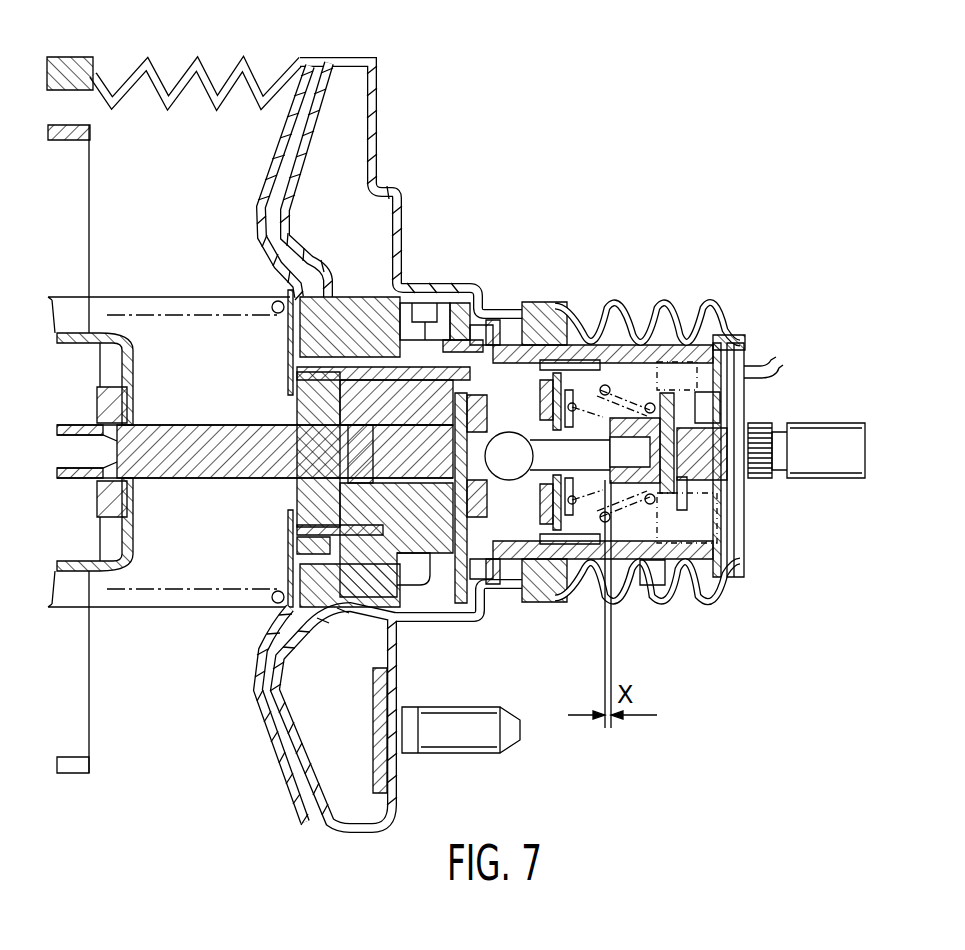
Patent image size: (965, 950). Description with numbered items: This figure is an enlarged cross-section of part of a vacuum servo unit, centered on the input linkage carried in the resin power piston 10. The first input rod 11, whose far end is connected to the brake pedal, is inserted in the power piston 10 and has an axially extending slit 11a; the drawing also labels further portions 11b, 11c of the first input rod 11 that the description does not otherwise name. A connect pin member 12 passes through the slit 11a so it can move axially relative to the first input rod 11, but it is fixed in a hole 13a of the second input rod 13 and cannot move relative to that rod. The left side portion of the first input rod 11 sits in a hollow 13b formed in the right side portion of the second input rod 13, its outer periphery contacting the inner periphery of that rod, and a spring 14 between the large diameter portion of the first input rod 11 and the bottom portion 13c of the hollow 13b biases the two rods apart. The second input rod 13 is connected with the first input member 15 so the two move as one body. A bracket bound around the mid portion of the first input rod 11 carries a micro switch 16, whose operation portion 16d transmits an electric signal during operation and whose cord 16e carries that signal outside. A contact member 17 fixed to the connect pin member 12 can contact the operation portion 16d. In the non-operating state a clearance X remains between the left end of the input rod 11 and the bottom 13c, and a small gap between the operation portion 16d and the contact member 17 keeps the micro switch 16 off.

The power piston 10 is at (575, 355).
The first input rod 11 is at (850, 453).
The slit 11a is at (747, 430).
The lower engagement portion 11b is at (660, 580).
The upper engagement portion 11c is at (657, 400).
The connect pin member 12 is at (733, 477).
The second input rod 13 is at (500, 590).
The hole 13a is at (737, 530).
The hollow 13b is at (625, 430).
The bottom portion 13c is at (583, 577).
The spring 14 is at (618, 590).
The first input member 15 is at (491, 370).
The micro switch 16 is at (735, 350).
The operation portion 16d is at (713, 397).
The cord 16e is at (760, 363).
The contact member 17 is at (687, 587).